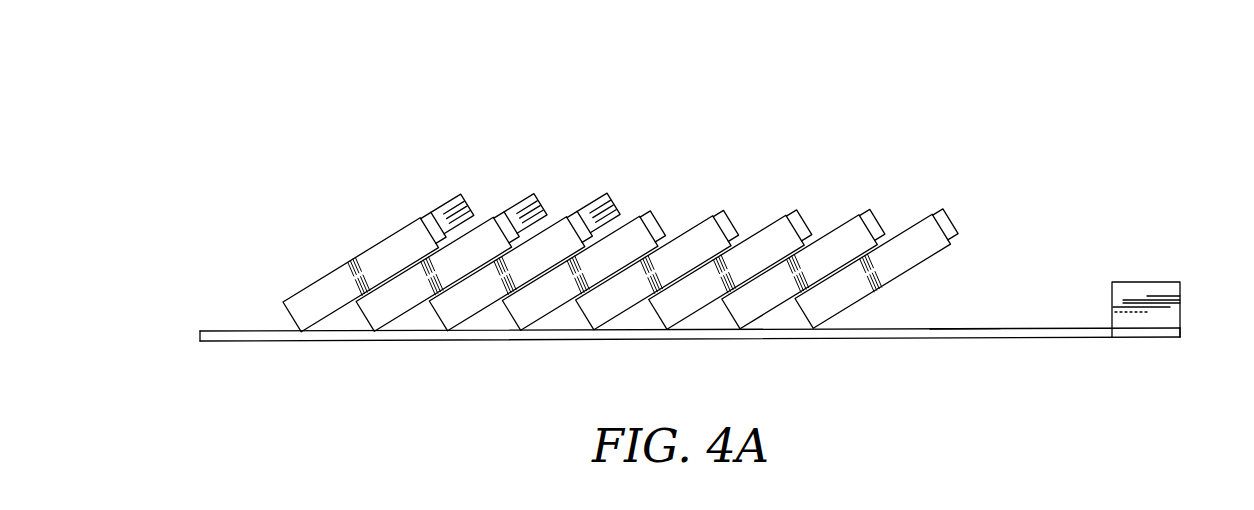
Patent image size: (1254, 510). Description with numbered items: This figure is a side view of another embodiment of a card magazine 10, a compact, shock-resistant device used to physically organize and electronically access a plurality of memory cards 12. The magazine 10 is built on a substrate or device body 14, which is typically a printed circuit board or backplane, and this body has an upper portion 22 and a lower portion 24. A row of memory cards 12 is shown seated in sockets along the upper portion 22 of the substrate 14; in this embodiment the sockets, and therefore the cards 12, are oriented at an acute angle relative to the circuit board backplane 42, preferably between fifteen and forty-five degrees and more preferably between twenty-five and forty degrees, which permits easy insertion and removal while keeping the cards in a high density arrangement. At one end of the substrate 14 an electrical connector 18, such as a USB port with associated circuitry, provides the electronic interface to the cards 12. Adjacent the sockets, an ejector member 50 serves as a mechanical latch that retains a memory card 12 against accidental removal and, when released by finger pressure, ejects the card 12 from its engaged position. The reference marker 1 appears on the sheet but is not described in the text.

The electronic system 1 is at (1175, 487).
The card magazine 10 is at (1138, 97).
The memory card 12 is at (595, 203).
The substrate or device body 14 is at (690, 357).
The electrical connector 18 is at (1148, 282).
The upper portion 22 is at (224, 330).
The lower portion 24 is at (257, 344).
The circuit board backplane 42 is at (933, 329).
The ejector member 50 is at (877, 220).